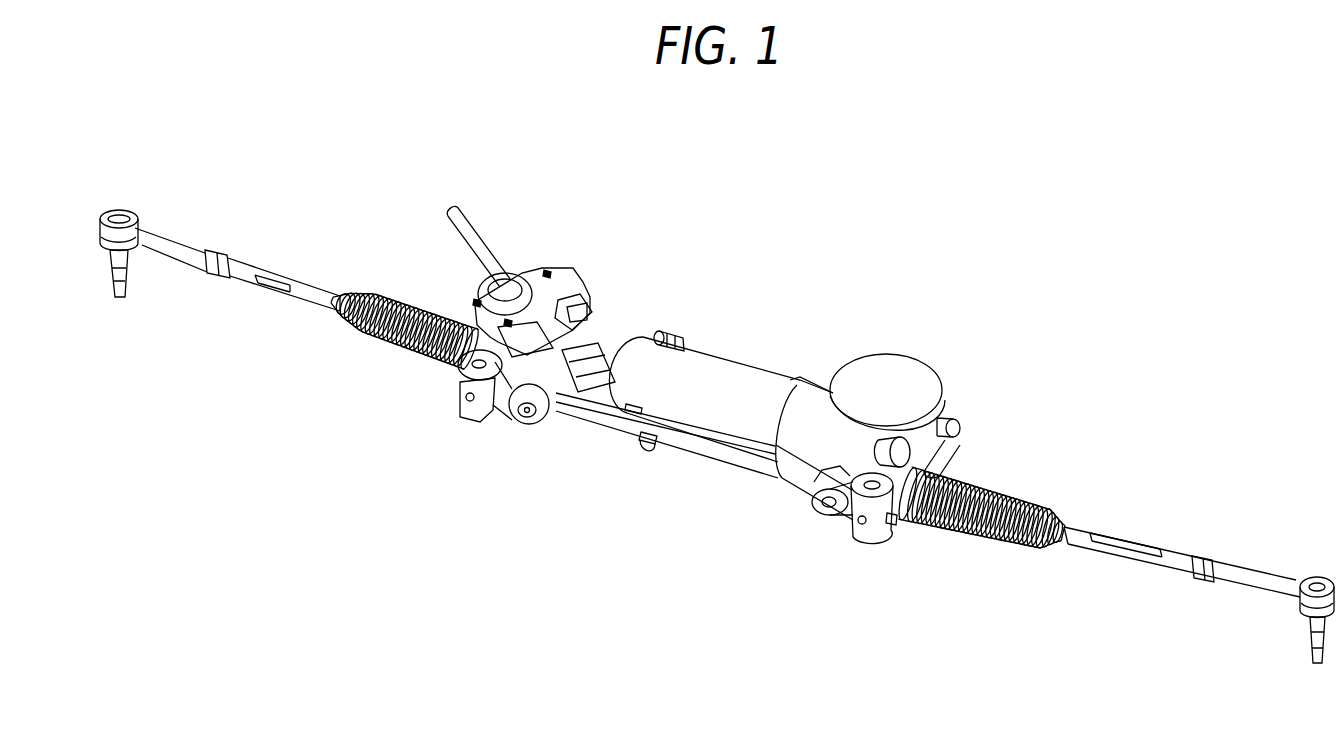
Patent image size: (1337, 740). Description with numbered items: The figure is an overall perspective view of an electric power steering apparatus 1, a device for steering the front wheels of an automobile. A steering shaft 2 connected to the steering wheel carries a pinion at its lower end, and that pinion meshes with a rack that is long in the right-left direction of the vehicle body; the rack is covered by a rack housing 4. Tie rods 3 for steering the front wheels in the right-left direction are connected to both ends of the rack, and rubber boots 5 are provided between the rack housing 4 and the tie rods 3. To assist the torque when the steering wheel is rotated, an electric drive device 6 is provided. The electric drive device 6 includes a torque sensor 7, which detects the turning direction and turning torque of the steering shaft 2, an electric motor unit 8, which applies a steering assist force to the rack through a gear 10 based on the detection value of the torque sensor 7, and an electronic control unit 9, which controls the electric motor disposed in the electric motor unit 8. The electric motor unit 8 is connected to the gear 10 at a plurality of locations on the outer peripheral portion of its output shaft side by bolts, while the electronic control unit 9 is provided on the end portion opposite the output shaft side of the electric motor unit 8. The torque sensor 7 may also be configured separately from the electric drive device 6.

The electric power steering apparatus 1 is at (678, 480).
The steering shaft 2 is at (474, 245).
The tie rods 3 is at (177, 240).
The rack housing 4 is at (894, 522).
The rubber boots 5 is at (382, 295).
The electric drive device 6 is at (723, 208).
The torque sensor 7 is at (583, 284).
The electric motor unit 8 is at (738, 377).
The electronic control unit (ECU) 9 is at (643, 336).
The gear 10 is at (887, 362).